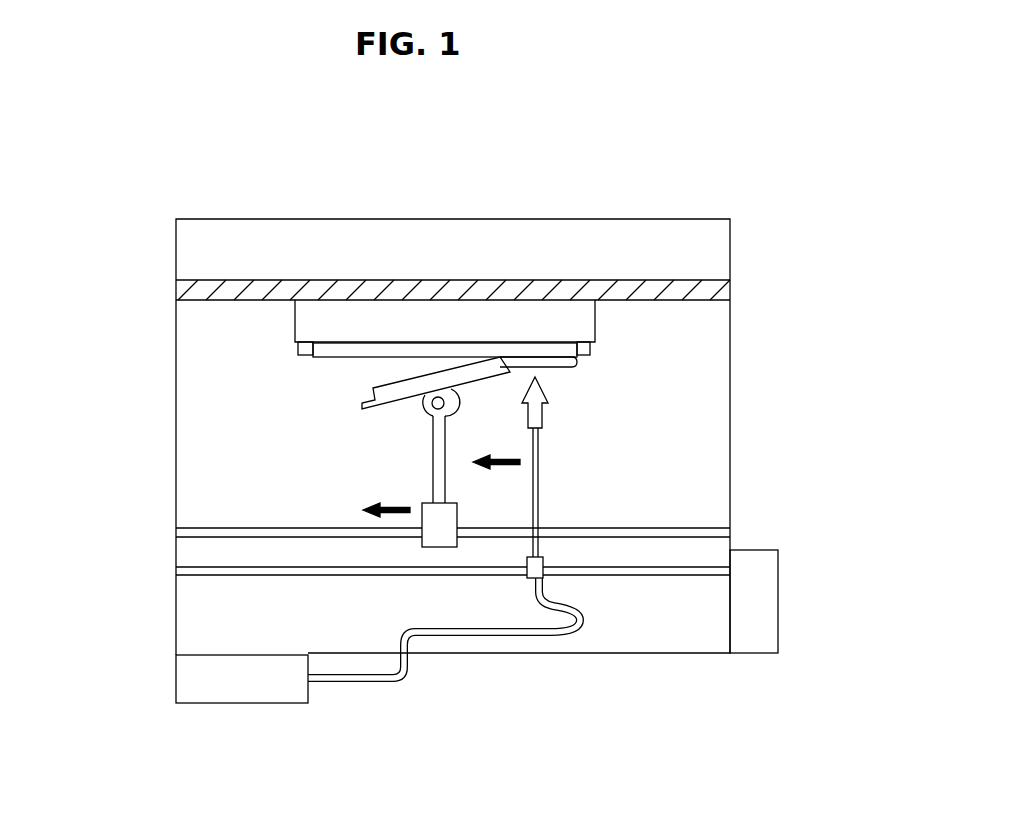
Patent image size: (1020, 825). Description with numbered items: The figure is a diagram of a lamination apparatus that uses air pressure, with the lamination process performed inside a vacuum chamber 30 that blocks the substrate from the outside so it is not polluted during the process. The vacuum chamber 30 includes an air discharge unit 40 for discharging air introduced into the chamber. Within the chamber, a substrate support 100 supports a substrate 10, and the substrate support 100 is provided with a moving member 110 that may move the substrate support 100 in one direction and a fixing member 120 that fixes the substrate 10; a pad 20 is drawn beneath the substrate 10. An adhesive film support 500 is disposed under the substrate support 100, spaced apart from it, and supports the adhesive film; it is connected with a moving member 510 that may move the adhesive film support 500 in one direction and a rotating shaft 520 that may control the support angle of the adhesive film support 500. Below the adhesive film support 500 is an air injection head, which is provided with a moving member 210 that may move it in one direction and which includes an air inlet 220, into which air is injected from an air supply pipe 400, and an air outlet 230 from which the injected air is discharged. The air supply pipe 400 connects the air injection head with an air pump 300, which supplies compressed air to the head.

The substrate 10 is at (590, 348).
The pad 20 is at (577, 365).
The vacuum chamber 30 is at (176, 245).
The air discharge unit 40 is at (763, 610).
The substrate support 100 is at (450, 317).
The moving member 110 is at (380, 290).
The fixing member 120 is at (300, 356).
The moving member 210 is at (543, 578).
The air inlet 220 is at (538, 496).
The air outlet 230 is at (537, 380).
The air pump 300 is at (190, 682).
The air supply pipe 400 is at (470, 634).
The adhesive film support 500 is at (363, 405).
The moving member 510 is at (432, 525).
The rotating shaft 520 is at (430, 408).